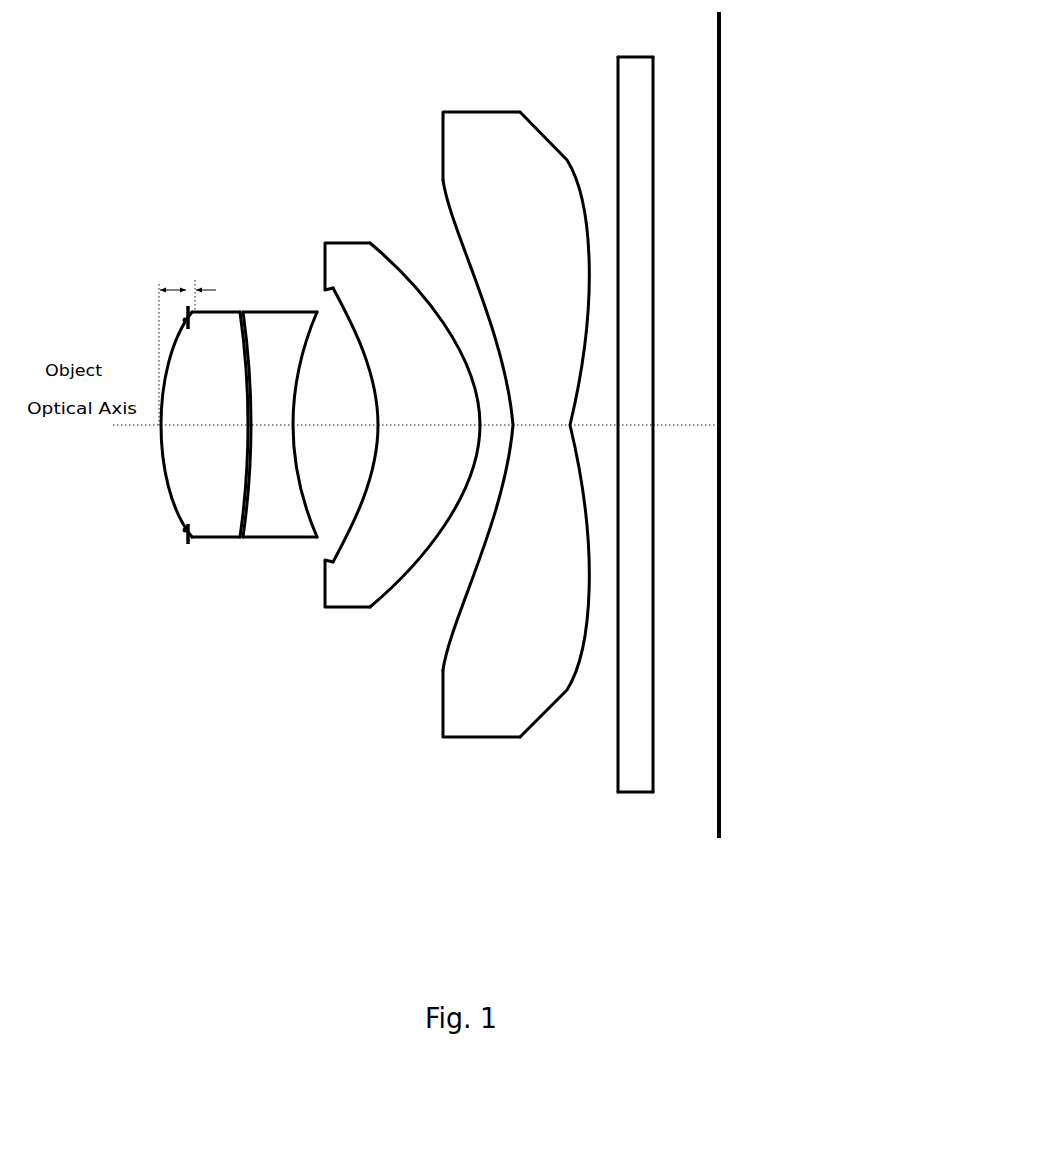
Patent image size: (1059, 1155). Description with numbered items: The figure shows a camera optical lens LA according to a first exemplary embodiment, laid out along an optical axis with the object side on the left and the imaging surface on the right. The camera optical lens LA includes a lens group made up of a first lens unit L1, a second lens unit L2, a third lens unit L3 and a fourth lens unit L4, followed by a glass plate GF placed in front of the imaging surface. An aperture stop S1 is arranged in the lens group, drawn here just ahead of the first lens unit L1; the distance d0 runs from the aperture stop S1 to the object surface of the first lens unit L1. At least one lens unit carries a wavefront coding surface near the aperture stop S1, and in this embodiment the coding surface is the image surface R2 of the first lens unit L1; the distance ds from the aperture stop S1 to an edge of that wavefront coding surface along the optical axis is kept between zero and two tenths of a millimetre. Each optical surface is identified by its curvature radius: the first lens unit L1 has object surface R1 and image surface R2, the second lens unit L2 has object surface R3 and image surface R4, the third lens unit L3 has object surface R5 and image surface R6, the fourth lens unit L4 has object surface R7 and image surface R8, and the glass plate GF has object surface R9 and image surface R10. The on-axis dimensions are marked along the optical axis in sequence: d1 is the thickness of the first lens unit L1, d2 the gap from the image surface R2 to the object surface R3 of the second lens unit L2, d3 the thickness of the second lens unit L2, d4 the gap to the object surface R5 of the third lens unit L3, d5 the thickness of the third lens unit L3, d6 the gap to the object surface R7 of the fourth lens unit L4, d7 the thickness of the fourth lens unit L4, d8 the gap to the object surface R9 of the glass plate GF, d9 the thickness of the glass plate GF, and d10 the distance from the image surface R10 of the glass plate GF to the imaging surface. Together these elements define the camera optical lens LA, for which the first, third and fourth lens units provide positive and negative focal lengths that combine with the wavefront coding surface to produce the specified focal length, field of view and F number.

The aperture stop S1 is at (183, 317).
The distance from the aperture stop to the object surface of the first lens unit d0 is at (169, 345).
The distance from the aperture stop to an edge of the wavefront coding surface ds is at (199, 287).
The first lens unit L1 is at (182, 453).
The second lens unit L2 is at (280, 416).
The third lens unit L3 is at (401, 451).
The fourth lens unit L4 is at (480, 406).
The glass plate GF is at (637, 412).
The camera optical lens LA is at (897, 42).
The curvature radius of an object surface of the first lens unit R1 is at (162, 455).
The curvature radius of an image surface of the first lens unit R2 is at (247, 450).
The curvature radius of an object surface of the second lens unit R3 is at (257, 450).
The curvature radius of an image surface of the second lens unit R4 is at (295, 350).
The curvature radius of an object surface of the third lens unit R5 is at (373, 450).
The curvature radius of an image surface of the third lens unit R6 is at (455, 502).
The curvature radius of an object surface of the fourth lens unit R7 is at (507, 363).
The curvature radius of an image surface of the fourth lens unit R8 is at (578, 337).
The curvature radius of an object surface of the glass plate R9 is at (616, 170).
The curvature radius of an image surface of the glass plate R10 is at (655, 157).
The thickness of the first lens unit d1 is at (204, 414).
The distance from the image surface of the first lens unit to the object surface of d2 is at (245, 312).
The thickness of the second lens unit d3 is at (272, 415).
The distance from the image surface of the second lens unit to the object surface of d4 is at (335, 415).
The thickness of the third lens unit d5 is at (429, 415).
The distance from the image surface of the third lens unit to the object surface of d6 is at (496, 415).
The thickness of the fourth lens unit d7 is at (541, 411).
The distance from the image surface of the fourth lens unit to the object surface of d8 is at (594, 412).
The thickness of the glass plate d9 is at (635, 414).
The distance from the image surface of the glass plate to the imaging surface d10 is at (684, 414).